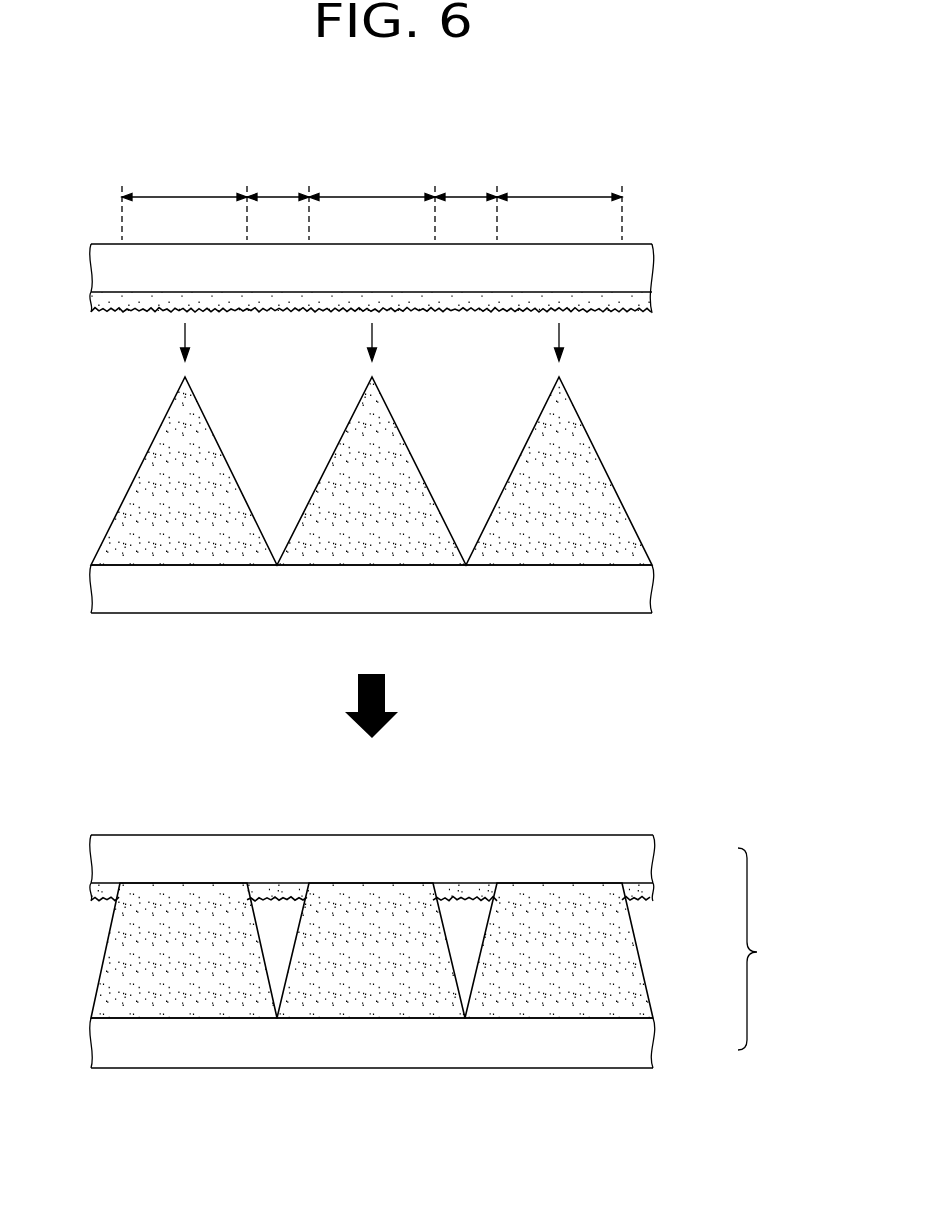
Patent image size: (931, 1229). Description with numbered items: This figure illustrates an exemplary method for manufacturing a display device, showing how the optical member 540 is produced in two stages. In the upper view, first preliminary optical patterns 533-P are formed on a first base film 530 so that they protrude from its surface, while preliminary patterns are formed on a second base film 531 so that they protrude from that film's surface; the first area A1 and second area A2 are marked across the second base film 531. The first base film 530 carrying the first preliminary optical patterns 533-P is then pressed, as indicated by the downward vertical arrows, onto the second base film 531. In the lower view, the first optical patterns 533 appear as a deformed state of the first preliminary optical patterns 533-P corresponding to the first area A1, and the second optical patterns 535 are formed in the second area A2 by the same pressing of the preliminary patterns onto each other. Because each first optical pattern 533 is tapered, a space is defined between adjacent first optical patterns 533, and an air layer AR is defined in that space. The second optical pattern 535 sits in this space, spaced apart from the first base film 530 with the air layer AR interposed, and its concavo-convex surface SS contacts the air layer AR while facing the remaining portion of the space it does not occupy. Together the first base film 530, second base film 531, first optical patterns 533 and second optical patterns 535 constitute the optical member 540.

The second base film 531 is at (643, 268).
The first preliminary optical patterns 533-P is at (643, 298).
The first base film 530 is at (642, 588).
The second optical patterns 535 is at (642, 889).
The first optical patterns 533 is at (618, 951).
The optical member 540 is at (770, 949).
The air layer AR is at (278, 925).
The concavo-convex surface SS is at (458, 896).
The first area A1 is at (372, 203).
The second area A2 is at (372, 184).